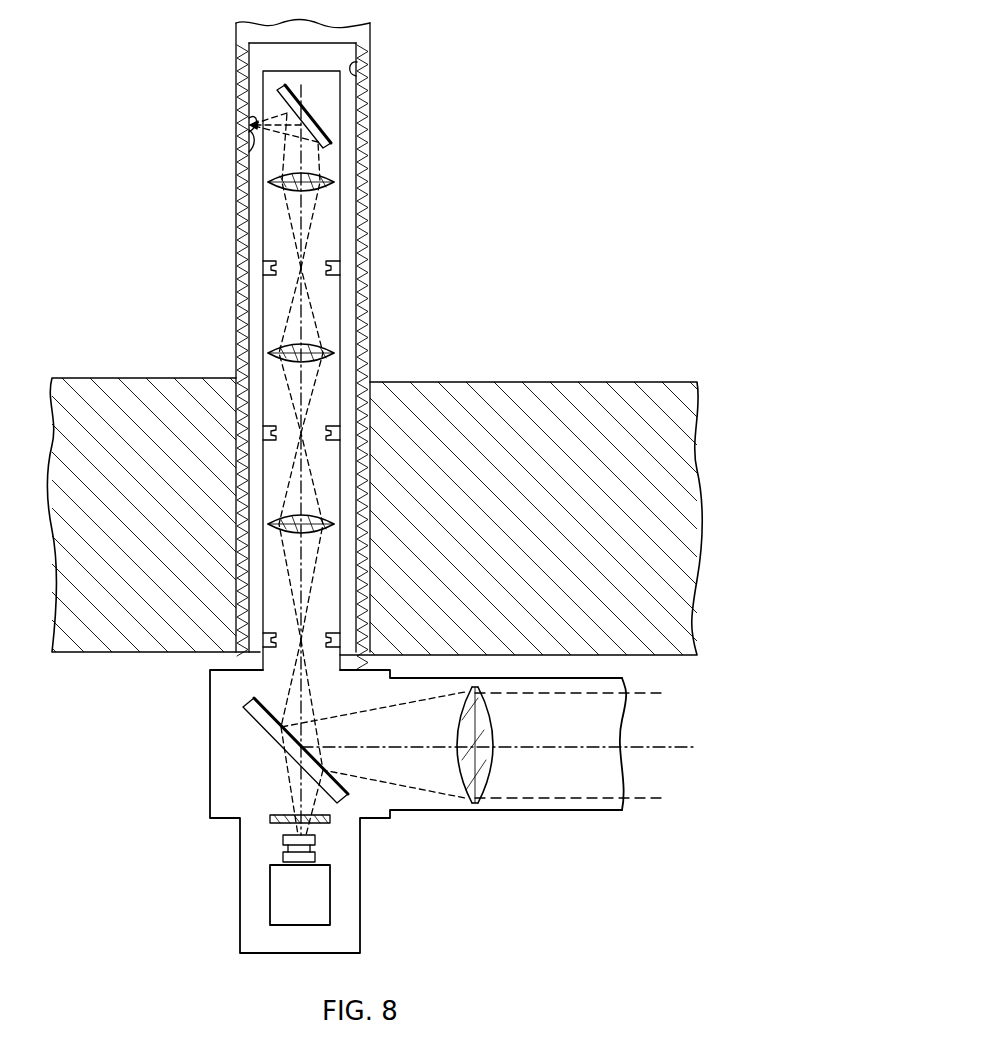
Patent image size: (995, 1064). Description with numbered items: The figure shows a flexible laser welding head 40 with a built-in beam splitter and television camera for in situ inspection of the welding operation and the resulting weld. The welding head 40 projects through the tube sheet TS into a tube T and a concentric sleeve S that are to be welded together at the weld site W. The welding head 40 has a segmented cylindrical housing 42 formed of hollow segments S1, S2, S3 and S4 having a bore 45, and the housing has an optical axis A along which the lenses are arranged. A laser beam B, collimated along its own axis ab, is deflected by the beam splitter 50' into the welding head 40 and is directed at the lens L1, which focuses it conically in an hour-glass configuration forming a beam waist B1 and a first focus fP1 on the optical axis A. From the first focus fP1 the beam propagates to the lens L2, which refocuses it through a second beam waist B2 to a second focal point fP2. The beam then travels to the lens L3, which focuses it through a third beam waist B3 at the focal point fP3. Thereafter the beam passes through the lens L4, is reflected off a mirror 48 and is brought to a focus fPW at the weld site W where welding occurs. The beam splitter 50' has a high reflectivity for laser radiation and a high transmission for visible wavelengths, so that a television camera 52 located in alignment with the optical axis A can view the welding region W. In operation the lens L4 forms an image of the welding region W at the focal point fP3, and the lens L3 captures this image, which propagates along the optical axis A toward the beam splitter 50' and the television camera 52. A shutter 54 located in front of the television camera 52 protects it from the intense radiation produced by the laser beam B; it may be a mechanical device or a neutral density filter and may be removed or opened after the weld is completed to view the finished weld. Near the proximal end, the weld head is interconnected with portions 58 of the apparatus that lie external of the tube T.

The flexible laser welding head 40 is at (318, 66).
The tube T is at (371, 37).
The sleeve S is at (360, 75).
The weld site W is at (246, 152).
The mirror 48 is at (342, 118).
The lens L4 is at (333, 180).
The segment S4 is at (340, 206).
The optical axis A is at (312, 214).
The segmented cylindrical housing 42 is at (340, 286).
The bore 45 is at (264, 220).
The third focal point fP3 is at (292, 264).
The beam waist B3 is at (308, 262).
The lens L3 is at (334, 350).
The segment S3 is at (340, 372).
The tube sheet TS is at (497, 381).
The beam waist B2 is at (308, 428).
The second focal point fP2 is at (298, 434).
The lens L2 is at (334, 520).
The segment S2 is at (340, 598).
The beam waist B1 is at (290, 632).
The first focal point fP1 is at (322, 638).
The segment S1 is at (342, 662).
The external apparatus portions 58 is at (208, 710).
The beam splitter 50' is at (286, 750).
The shutter 54 is at (275, 814).
The television camera 52 is at (330, 897).
The lens L1 is at (490, 776).
The laser beam B is at (566, 798).
The beam axis ab is at (640, 752).
The weld focus fPW is at (244, 120).